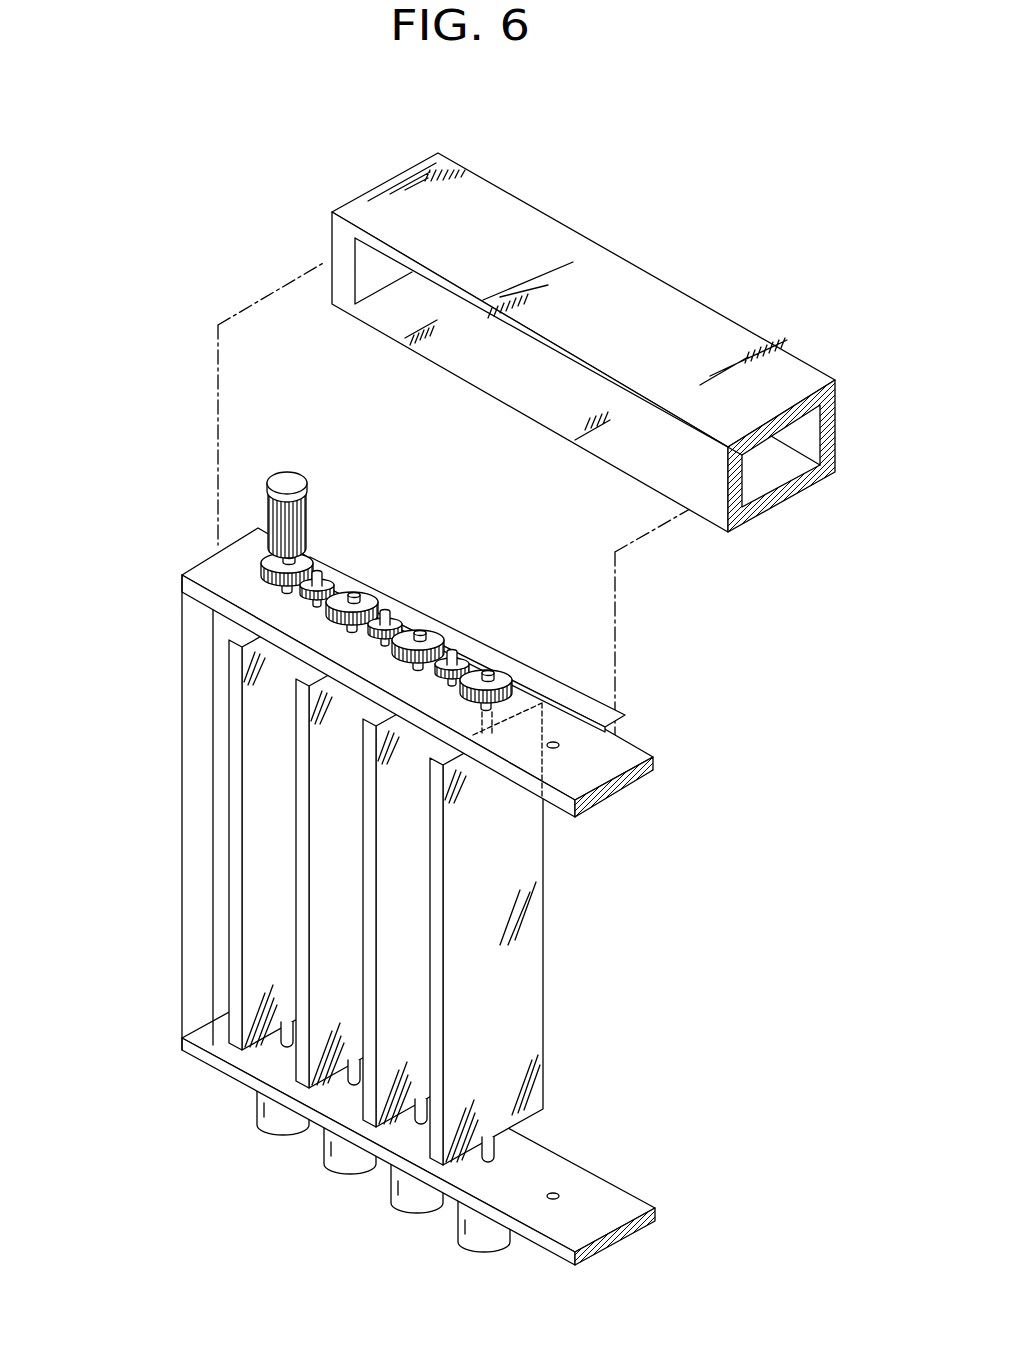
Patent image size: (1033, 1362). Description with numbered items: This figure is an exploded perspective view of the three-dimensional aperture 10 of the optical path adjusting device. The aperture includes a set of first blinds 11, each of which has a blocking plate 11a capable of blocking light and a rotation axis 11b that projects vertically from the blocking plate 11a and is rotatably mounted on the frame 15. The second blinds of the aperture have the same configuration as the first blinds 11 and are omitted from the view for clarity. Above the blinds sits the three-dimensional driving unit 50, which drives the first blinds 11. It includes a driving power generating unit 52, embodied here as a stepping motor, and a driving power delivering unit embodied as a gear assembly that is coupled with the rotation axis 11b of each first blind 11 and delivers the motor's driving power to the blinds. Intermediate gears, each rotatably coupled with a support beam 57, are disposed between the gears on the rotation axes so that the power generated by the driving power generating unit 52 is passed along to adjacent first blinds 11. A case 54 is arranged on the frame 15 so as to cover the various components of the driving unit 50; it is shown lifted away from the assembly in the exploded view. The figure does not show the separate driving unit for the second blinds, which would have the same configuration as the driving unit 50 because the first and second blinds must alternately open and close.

The 3D aperture 10 is at (206, 271).
The first blinds 11 is at (150, 1123).
The blocking plate 11a is at (237, 975).
The rotation axis 11b is at (280, 1038).
The frame 15 is at (297, 1095).
The 3D driving unit 50 is at (416, 497).
The driving power generating unit 52 is at (290, 480).
The case 54 is at (700, 330).
The support beam 57 is at (500, 653).